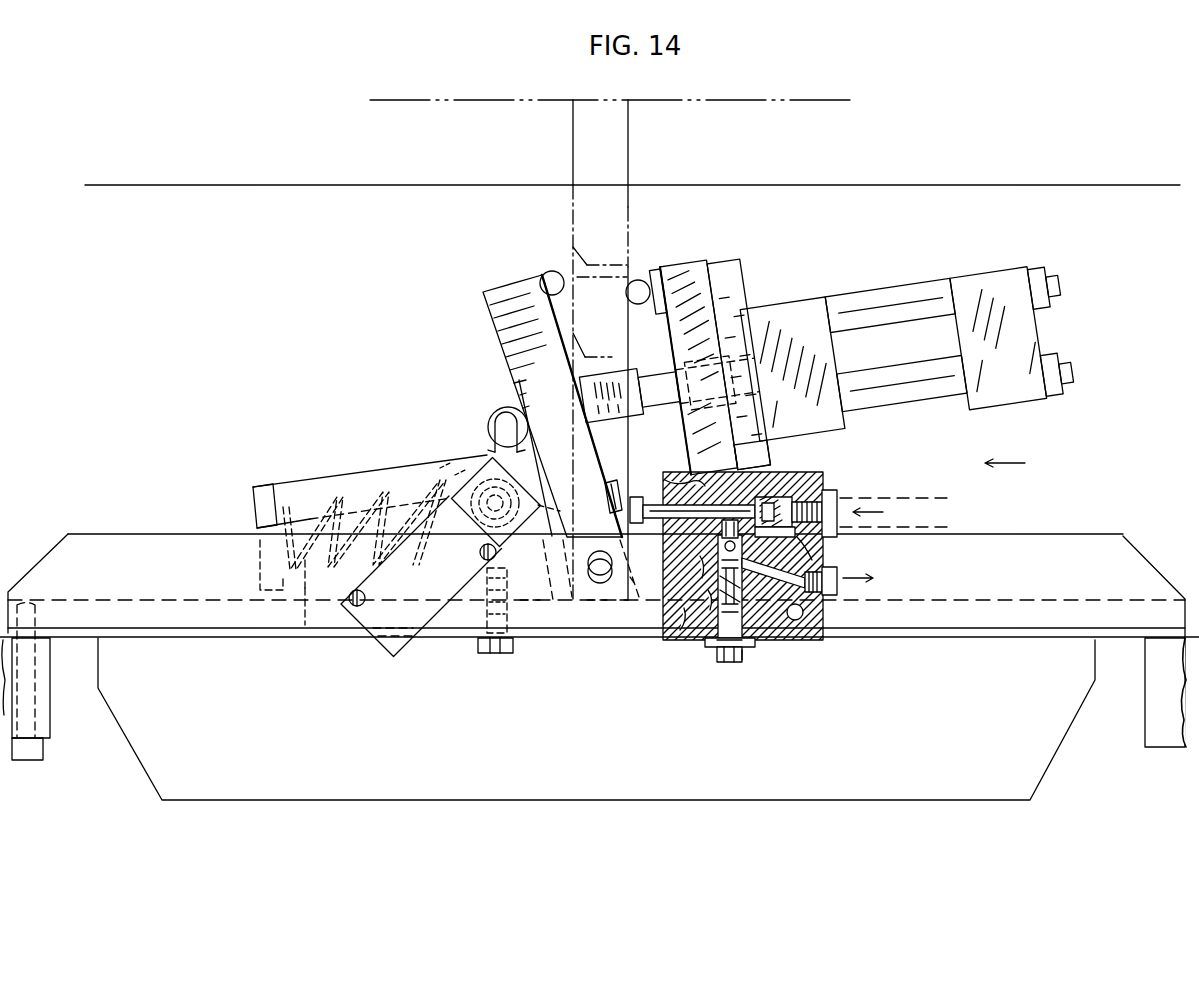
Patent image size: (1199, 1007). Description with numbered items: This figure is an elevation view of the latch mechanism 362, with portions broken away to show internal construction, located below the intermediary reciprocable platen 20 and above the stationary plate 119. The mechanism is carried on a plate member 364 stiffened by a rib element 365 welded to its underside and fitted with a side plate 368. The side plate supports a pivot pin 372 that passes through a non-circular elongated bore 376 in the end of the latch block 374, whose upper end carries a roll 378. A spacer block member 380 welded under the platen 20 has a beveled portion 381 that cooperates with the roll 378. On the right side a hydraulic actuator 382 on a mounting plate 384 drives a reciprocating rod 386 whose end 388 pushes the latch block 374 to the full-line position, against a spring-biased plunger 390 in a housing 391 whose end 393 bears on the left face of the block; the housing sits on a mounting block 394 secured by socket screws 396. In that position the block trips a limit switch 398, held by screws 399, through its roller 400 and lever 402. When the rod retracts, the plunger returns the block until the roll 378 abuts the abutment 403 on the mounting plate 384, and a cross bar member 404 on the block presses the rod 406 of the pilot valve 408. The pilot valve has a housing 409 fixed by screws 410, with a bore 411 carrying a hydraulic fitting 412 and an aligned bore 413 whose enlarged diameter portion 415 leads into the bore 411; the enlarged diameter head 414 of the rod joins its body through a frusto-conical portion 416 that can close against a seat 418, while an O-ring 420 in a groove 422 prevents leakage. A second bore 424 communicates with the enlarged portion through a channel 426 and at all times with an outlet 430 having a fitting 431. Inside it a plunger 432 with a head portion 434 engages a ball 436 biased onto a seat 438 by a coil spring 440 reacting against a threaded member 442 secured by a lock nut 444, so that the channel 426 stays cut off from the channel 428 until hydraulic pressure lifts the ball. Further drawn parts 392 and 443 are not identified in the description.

The intermediary reciprocable platen 20 is at (1068, 190).
The stationary plate 119 is at (52, 722).
The latch mechanism 362 is at (1027, 462).
The plate member 364 is at (1085, 602).
The rib element 365 is at (1042, 775).
The side plate 368 is at (1062, 550).
The pivot pin 372 is at (605, 563).
The latch block 374 is at (645, 600).
The non-circular elongated bore 376 is at (598, 585).
The roll 378 is at (552, 277).
The spacer block member 380 is at (630, 182).
The beveled portion 381 is at (589, 350).
The hydraulic actuator 382 is at (796, 312).
The mounting plate 384 is at (700, 264).
The reciprocating rod 386 is at (633, 376).
The rod end 388 is at (575, 410).
The plunger 390 is at (470, 461).
The housing 391 is at (385, 471).
The housing end wall 392 is at (316, 482).
The plunger end 393 is at (556, 510).
The mounting block 394 is at (302, 622).
The socket screws 396 is at (490, 655).
The limit switch 398 is at (397, 656).
The screws 399 is at (318, 634).
The roller 400 is at (511, 409).
The lever 402 is at (490, 446).
The abutment 403 is at (655, 270).
The cross bar member 404 is at (612, 480).
The rod 406 is at (641, 496).
The pilot valve 408 is at (834, 481).
The housing 409 is at (752, 446).
The screws 410 is at (662, 638).
The bore 411 is at (803, 536).
The hydraulic fitting 412 is at (838, 493).
The bore 413 is at (670, 475).
The enlarged diameter head 414 is at (814, 498).
The enlarged diameter portion 415 is at (740, 504).
The frusto-conical portion 416 is at (776, 531).
The seat 418 is at (780, 495).
The O-ring 420 is at (720, 478).
The groove 422 is at (702, 556).
The second bore 424 is at (682, 628).
The channel 426 is at (727, 527).
The channel 428 is at (786, 630).
The outlet 430 is at (835, 592).
The fitting 431 is at (832, 574).
The plunger 432 is at (708, 648).
The head portion 434 is at (768, 570).
The ball 436 is at (710, 598).
The seat 438 is at (724, 547).
The coil spring 440 is at (754, 640).
The threaded member 442 is at (730, 663).
The washer 443 is at (712, 652).
The lock nut 444 is at (744, 648).